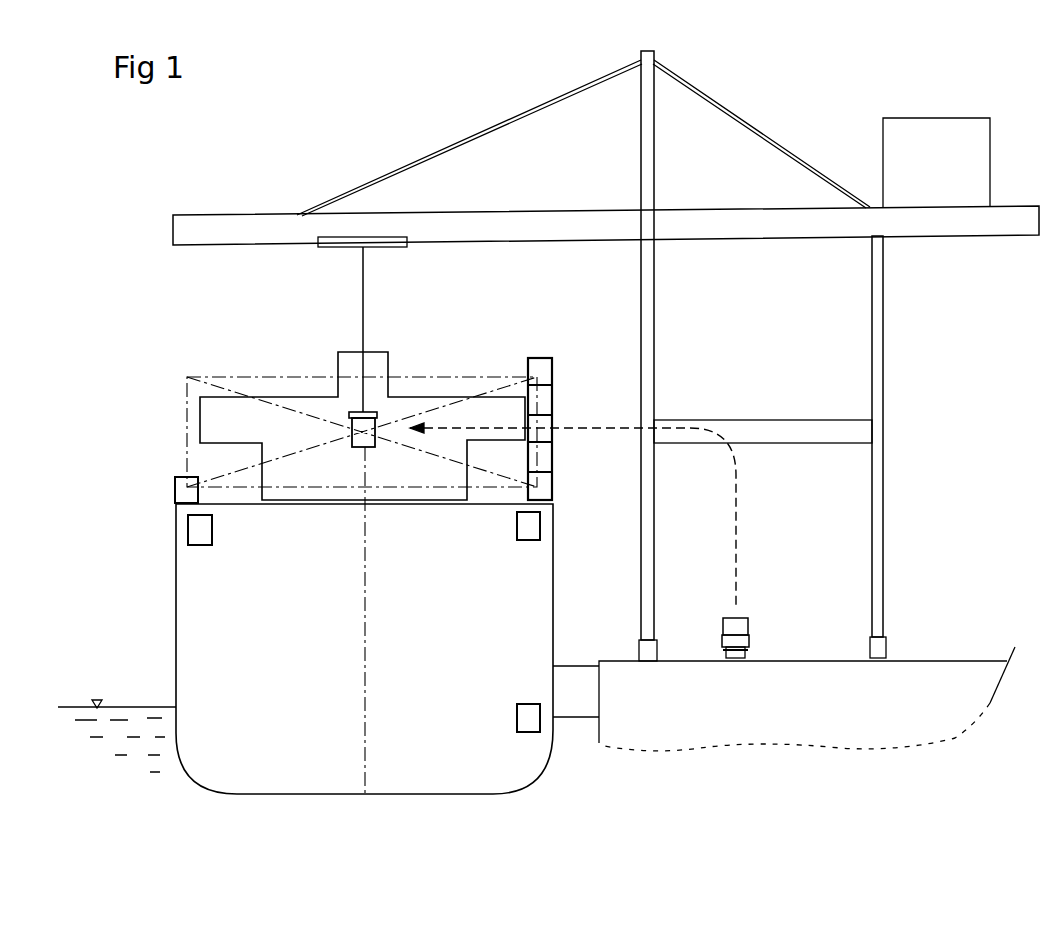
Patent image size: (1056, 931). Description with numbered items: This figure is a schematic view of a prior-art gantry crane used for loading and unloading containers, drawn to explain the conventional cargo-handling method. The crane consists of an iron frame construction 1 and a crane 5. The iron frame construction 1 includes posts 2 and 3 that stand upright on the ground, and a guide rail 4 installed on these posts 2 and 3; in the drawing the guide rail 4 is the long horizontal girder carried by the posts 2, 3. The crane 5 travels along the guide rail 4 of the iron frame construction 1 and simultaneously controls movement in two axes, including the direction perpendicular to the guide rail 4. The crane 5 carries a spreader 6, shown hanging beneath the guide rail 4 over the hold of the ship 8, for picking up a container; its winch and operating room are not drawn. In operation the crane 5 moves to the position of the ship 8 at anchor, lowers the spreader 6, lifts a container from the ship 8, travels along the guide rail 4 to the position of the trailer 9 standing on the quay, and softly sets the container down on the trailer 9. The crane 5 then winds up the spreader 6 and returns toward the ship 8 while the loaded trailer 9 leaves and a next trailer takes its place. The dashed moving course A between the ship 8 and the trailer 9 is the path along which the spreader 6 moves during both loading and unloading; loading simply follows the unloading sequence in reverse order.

The iron frame construction 1 is at (778, 140).
The post 2 is at (648, 323).
The post 3 is at (878, 323).
The guide rail 4 is at (996, 213).
The crane 5 is at (360, 320).
The spreader 6 is at (355, 410).
The ship 8 is at (200, 667).
The trailer 9 is at (748, 628).
The moving course A is at (598, 427).